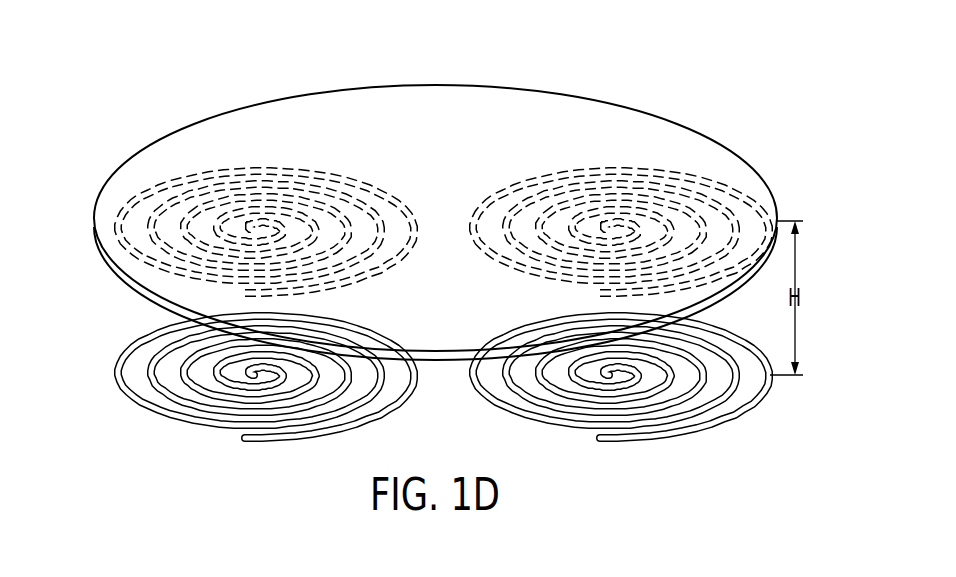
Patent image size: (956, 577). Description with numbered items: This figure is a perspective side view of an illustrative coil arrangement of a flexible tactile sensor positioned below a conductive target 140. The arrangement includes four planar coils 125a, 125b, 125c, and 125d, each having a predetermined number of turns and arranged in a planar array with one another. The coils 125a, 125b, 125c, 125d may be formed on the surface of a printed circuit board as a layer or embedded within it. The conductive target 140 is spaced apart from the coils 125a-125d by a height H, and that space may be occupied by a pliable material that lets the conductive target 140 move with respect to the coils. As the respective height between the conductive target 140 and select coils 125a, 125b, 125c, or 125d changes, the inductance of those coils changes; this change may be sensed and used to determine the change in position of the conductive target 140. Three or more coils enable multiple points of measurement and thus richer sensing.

The conductive target 140 is at (265, 101).
The coil 125a is at (125, 192).
The coil 125b is at (733, 192).
The coil 125c is at (128, 408).
The coil 125d is at (732, 420).